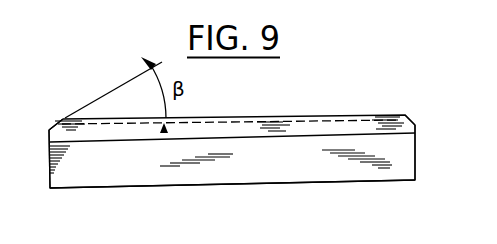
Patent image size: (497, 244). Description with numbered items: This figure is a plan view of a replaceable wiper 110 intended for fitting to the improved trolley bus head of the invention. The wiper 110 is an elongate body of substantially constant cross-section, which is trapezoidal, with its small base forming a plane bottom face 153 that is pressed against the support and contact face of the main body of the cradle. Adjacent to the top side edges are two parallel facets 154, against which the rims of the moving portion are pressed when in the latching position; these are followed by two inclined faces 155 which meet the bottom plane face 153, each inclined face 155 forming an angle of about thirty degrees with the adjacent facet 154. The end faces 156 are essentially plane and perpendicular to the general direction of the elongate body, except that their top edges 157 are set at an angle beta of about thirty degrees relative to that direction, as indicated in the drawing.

The replaceable wiper 110 is at (232, 120).
The plane bottom face 153 is at (208, 184).
The parallel facets 154 is at (229, 125).
The inclined faces 155 is at (136, 158).
The end faces 156 is at (49, 150).
The top edges 157 is at (60, 123).